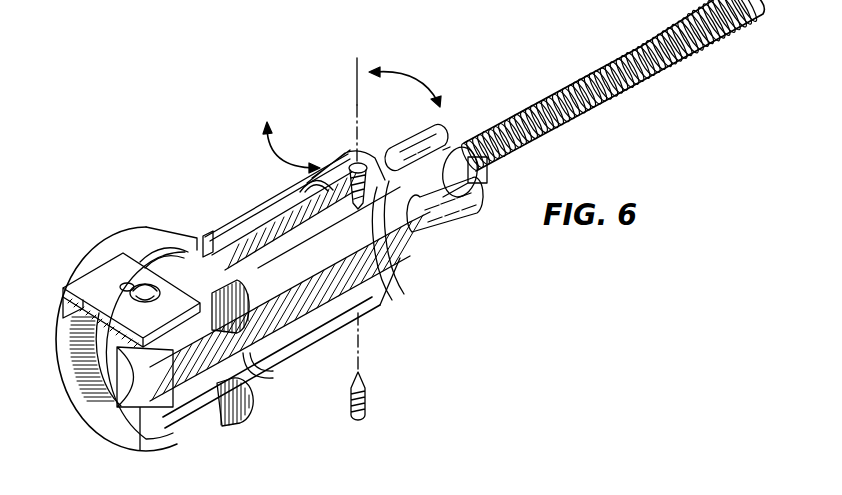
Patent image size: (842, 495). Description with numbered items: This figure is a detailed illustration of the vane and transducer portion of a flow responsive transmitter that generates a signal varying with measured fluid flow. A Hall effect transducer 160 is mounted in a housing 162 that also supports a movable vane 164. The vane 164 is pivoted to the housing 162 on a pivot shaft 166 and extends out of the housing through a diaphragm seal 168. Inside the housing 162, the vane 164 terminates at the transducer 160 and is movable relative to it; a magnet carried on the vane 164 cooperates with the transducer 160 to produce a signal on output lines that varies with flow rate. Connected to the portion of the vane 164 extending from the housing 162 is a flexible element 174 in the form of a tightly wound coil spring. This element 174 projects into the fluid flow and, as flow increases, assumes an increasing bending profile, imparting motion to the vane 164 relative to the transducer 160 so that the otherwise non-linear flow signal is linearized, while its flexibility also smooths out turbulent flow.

The Hall effect transducer 160 is at (112, 310).
The housing 162 is at (183, 417).
The movable vane 164 is at (100, 383).
The pivot shaft 166 is at (372, 163).
The diaphragm seal 168 is at (465, 222).
The flexible element 174 is at (575, 122).